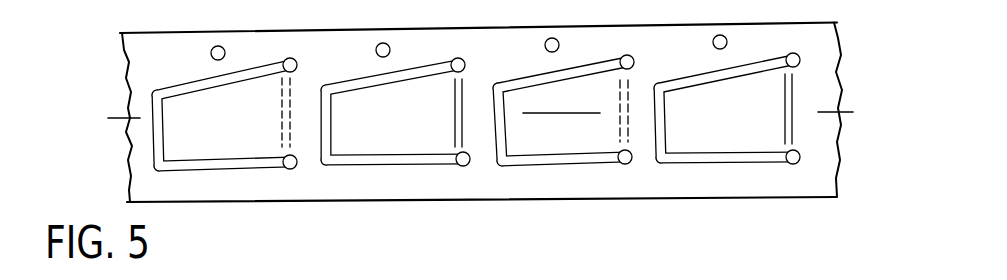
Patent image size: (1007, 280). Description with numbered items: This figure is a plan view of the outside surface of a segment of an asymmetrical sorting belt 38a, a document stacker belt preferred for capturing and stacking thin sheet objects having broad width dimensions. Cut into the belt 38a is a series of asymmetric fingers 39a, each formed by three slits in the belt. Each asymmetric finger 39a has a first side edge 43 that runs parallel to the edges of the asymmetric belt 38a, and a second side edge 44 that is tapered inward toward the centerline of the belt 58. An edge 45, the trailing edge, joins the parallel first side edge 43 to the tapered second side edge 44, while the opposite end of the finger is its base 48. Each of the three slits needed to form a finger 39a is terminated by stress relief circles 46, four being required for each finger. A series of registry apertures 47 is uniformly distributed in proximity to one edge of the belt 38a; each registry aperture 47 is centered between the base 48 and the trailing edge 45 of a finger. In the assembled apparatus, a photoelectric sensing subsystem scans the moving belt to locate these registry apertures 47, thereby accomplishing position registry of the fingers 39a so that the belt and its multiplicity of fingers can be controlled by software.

The asymmetrical sorting belt 38a is at (840, 68).
The asymmetric finger 39a is at (548, 96).
The first side edge 43 is at (232, 157).
The second side edge 44 is at (388, 86).
The edge 45 is at (165, 144).
The stress relief circles 46 is at (297, 68).
The registry apertures 47 is at (211, 56).
The base 48 is at (454, 113).
The belt 58 is at (122, 118).